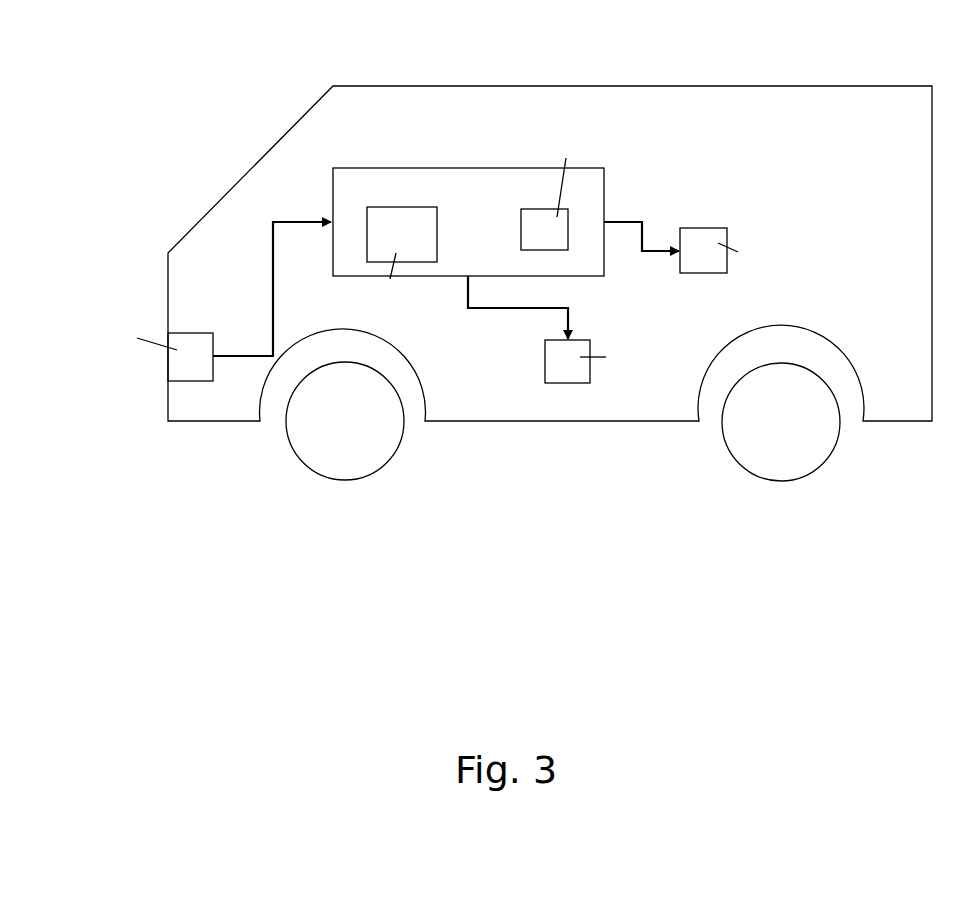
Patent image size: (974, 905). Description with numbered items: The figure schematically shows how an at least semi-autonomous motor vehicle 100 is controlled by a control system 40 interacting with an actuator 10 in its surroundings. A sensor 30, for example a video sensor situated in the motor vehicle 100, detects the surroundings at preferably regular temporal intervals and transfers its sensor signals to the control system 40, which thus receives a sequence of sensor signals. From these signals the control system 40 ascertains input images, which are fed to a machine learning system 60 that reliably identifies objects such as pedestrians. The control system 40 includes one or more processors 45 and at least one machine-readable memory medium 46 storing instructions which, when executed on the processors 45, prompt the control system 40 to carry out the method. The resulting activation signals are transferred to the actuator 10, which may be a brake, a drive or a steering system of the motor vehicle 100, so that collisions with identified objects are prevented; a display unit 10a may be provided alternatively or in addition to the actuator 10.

The motor vehicle 100 is at (178, 233).
The control system 40 is at (427, 168).
The processors 45 is at (339, 197).
The machine-readable memory medium 46 is at (367, 207).
The machine learning system 60 is at (547, 208).
The display unit 10a is at (703, 208).
The sensor 30 is at (177, 362).
The actuator 10 is at (563, 383).